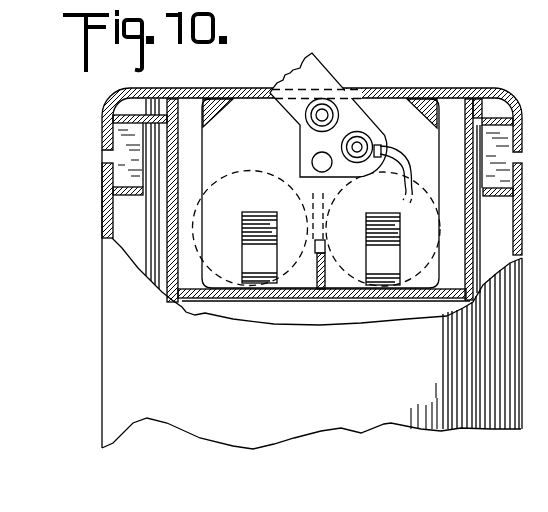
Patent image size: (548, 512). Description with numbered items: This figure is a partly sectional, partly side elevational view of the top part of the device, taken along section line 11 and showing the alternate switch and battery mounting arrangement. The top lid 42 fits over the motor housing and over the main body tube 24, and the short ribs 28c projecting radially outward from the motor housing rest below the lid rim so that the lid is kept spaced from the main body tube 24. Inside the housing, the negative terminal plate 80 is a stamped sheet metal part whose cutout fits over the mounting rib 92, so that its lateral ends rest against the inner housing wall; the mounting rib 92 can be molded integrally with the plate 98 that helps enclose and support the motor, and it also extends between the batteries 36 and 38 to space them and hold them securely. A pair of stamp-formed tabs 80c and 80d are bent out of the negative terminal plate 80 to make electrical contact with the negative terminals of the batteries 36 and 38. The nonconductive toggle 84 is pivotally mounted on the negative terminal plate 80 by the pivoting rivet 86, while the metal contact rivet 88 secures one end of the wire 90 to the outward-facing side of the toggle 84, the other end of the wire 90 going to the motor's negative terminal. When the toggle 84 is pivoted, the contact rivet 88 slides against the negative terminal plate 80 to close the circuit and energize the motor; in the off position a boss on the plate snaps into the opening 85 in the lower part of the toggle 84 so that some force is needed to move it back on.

The section line 11- 11 is at (322, 0).
The main body tube 24 is at (103, 397).
The short ribs 28c is at (123, 173).
The battery 36 is at (320, 200).
The battery 38 is at (243, 169).
The top lid 42 is at (107, 113).
The negative terminal plate 80 is at (410, 125).
The stamp-formed tab 80c is at (390, 263).
The stamp-formed tab 80d is at (247, 257).
The toggle 84 is at (302, 60).
The opening 85 is at (312, 161).
The pivoting rivet 86 is at (327, 102).
The contact rivet 88 is at (362, 140).
The wire 90 is at (403, 162).
The mounting rib 92 is at (315, 268).
The plate 98 is at (419, 301).